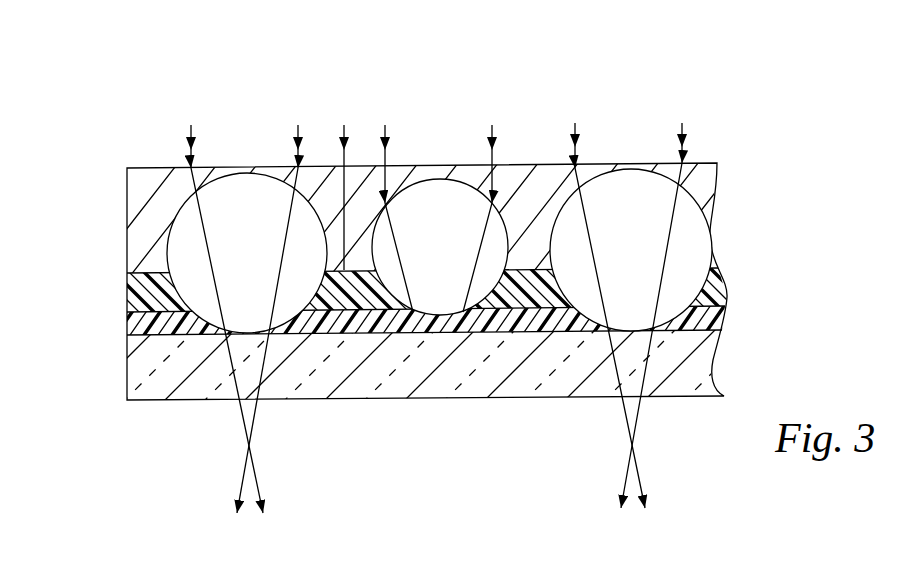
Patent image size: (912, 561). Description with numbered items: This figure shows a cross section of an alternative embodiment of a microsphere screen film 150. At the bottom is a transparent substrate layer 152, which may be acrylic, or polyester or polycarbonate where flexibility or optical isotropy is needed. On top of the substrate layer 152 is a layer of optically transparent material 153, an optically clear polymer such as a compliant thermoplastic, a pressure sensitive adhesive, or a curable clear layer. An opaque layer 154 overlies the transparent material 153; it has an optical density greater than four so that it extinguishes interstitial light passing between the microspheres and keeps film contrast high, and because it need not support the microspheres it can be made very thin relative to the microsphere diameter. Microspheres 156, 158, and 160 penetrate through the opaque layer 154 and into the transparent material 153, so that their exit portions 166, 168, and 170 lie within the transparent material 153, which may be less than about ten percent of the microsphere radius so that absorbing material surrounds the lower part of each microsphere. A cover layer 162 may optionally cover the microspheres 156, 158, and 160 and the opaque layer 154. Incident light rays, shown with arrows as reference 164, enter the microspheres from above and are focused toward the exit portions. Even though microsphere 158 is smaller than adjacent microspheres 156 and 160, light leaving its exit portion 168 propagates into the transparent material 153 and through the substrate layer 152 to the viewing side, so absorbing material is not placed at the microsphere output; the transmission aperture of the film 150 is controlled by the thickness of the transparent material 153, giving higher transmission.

The film 150 is at (722, 110).
The transparent substrate layer 152 is at (695, 363).
The layer of optically transparent material 153 is at (718, 317).
The opaque layer 154 is at (723, 287).
The microsphere 156 is at (692, 215).
The microsphere 158 is at (428, 202).
The microsphere 160 is at (192, 222).
The cover layer 162 is at (135, 257).
The incident light rays 164 is at (191, 132).
The exit portion 166 is at (344, 138).
The exit portion 168 is at (439, 320).
The exit portion 170 is at (245, 335).